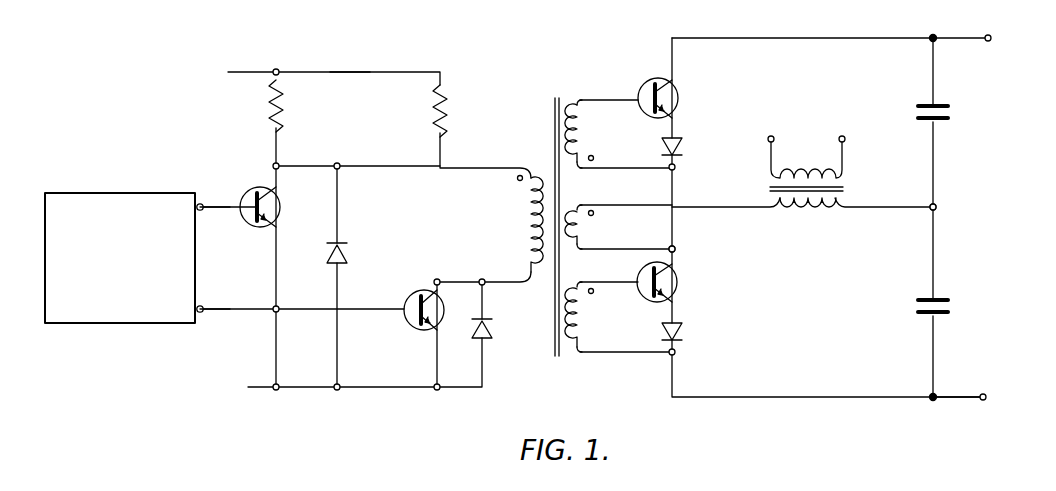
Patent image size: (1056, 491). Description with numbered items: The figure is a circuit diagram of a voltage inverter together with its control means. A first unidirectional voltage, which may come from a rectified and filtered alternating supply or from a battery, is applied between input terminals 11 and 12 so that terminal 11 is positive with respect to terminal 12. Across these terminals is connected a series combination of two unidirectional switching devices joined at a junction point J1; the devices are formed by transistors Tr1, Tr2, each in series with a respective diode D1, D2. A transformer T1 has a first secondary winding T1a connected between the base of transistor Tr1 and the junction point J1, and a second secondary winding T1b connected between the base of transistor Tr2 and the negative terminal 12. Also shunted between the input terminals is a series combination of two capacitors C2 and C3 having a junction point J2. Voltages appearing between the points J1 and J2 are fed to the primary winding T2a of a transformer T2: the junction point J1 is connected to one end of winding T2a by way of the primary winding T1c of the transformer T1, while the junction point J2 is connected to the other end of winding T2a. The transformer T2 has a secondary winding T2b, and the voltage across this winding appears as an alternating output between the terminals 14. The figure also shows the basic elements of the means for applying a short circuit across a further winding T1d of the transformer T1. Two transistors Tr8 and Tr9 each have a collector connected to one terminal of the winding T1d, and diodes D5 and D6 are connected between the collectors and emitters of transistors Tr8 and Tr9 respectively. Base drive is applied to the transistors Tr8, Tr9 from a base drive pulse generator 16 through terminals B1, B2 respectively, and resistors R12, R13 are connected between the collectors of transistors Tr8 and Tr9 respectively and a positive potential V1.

The base drive pulse generator 16 is at (115, 193).
The terminal B1 is at (215, 324).
The terminal B2 is at (215, 220).
The potential V1 is at (348, 72).
The resistor R13 is at (280, 106).
The resistor R12 is at (444, 110).
The transistor Tr9 is at (246, 192).
The transistor Tr8 is at (412, 293).
The transistor Tr1 is at (676, 92).
The transistor Tr2 is at (677, 283).
The diode D6 is at (342, 258).
The diode D5 is at (488, 334).
The diode D1 is at (680, 148).
The diode D2 is at (682, 332).
The transformer T1 is at (557, 92).
The first secondary winding T1a is at (585, 143).
The second secondary winding T1b is at (585, 327).
The primary winding T1c is at (585, 233).
The winding T1d is at (525, 230).
The junction point J1 is at (676, 247).
The junction point J2 is at (937, 205).
The transformer T2 is at (845, 190).
The primary winding T2a is at (810, 216).
The secondary winding T2b is at (765, 175).
The terminals 14 is at (849, 120).
The capacitor C2 is at (948, 116).
The capacitor C3 is at (940, 315).
The input terminal 11 is at (991, 38).
The input terminal 12 is at (986, 397).